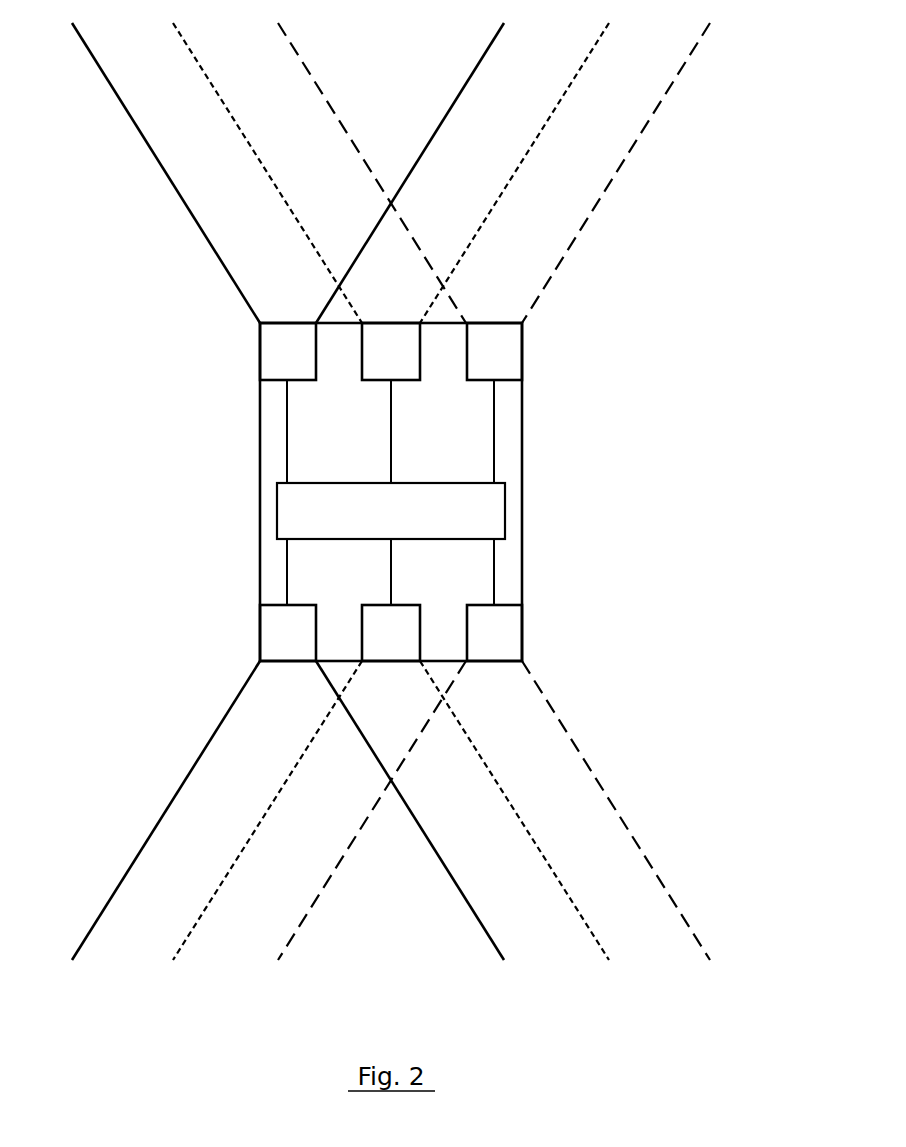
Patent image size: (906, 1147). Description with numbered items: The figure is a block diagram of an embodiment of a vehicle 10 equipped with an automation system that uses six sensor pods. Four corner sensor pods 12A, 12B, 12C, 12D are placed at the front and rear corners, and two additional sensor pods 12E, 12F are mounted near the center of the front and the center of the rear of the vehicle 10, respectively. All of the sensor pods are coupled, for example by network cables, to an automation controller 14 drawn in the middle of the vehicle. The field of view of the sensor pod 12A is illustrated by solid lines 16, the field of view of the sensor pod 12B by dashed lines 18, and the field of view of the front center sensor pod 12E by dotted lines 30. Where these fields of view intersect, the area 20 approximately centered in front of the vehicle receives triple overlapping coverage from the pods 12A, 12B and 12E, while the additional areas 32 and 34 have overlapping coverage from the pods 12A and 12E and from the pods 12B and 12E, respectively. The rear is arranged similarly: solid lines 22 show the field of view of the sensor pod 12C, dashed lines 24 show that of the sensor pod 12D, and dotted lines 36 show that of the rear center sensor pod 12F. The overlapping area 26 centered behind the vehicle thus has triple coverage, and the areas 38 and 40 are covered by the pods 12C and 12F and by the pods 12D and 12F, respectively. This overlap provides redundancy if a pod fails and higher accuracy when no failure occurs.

The vehicle 10 is at (378, 452).
The sensor pod 12A is at (221, 364).
The sensor pod 12B is at (560, 358).
The sensor pod 12C is at (213, 615).
The sensor pod 12D is at (561, 615).
The sensor pod 12E is at (390, 325).
The sensor pod 12F is at (390, 658).
The automation controller 14 is at (400, 526).
The solid lines 16 is at (279, 170).
The dashed lines 18 is at (486, 172).
The area of overlap 20 is at (378, 93).
The solid lines 22 is at (286, 827).
The dashed lines 24 is at (495, 827).
The overlapping area 26 is at (378, 918).
The dotted lines 30 is at (396, 173).
The area 32 is at (302, 170).
The area 34 is at (452, 170).
The dotted lines 36 is at (391, 810).
The area 38 is at (302, 825).
The area 40 is at (452, 825).